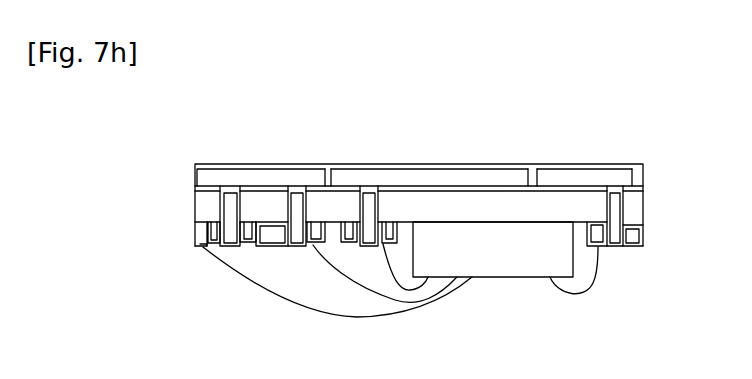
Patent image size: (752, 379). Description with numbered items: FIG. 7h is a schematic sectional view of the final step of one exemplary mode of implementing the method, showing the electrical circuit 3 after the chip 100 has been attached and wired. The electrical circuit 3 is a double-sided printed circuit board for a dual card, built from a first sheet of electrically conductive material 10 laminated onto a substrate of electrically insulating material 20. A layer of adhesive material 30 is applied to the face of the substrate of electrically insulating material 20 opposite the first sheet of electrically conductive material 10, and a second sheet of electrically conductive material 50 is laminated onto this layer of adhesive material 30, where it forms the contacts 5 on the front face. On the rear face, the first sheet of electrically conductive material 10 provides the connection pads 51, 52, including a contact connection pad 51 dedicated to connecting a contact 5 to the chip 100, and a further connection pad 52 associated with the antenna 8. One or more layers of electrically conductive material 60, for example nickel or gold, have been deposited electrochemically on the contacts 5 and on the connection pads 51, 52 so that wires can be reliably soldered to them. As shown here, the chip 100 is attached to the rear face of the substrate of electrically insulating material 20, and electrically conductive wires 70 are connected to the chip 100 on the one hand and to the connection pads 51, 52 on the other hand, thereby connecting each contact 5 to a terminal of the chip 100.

The electrical circuit 3 is at (715, 152).
The contact 5 is at (572, 178).
The antenna 8 is at (199, 257).
The first sheet of electrically conductive material 10 is at (637, 233).
The substrate of electrically insulating material 20 is at (637, 208).
The layer of adhesive material 30 is at (640, 190).
The second sheet of electrically conductive material 50 is at (633, 177).
The contact connection pad 51 is at (313, 235).
The connection pad 52 is at (200, 236).
The layer of electrically conductive material 60 is at (603, 168).
The electrically conductive wire 70 is at (400, 302).
The chip 100 is at (495, 260).